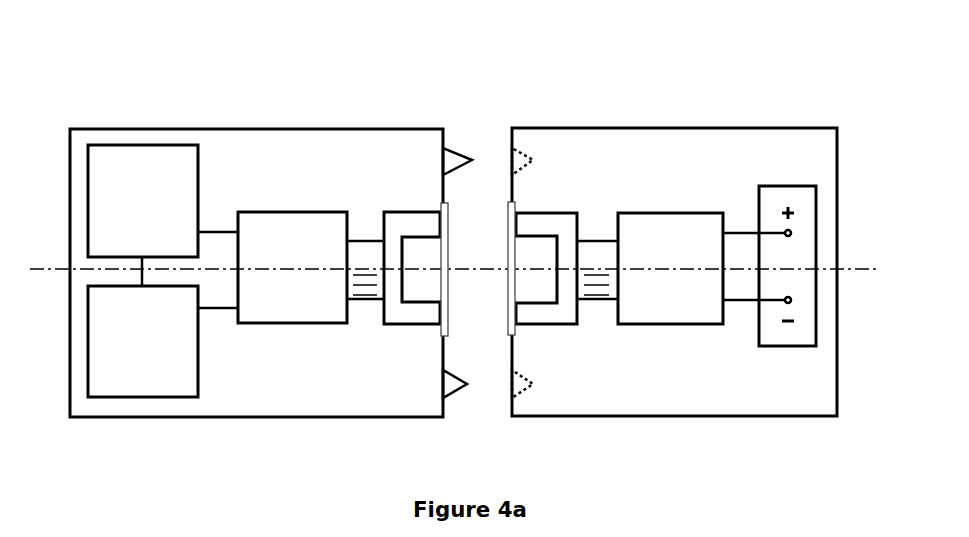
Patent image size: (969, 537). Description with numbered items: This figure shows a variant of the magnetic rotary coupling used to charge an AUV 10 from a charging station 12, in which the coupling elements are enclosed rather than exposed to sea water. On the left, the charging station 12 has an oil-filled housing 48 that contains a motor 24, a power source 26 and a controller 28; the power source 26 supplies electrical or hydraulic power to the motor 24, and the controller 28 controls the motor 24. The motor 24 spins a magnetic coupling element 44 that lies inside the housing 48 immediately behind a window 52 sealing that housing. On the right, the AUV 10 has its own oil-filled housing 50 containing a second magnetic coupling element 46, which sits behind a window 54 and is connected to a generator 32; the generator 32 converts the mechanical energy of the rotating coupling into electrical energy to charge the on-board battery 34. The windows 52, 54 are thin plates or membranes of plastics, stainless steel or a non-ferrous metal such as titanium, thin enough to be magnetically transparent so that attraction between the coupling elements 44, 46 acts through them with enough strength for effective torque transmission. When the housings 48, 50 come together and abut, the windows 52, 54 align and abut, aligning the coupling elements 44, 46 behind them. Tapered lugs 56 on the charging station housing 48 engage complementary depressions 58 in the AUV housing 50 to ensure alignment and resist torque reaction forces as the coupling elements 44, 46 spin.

The AUV 10 is at (643, 96).
The charging station 12 is at (279, 90).
The motor 24 is at (278, 255).
The power source 26 is at (129, 205).
The controller 28 is at (129, 353).
The generator 32 is at (656, 255).
The on-board battery 34 is at (808, 237).
The magnetic coupling element 44 is at (398, 222).
The magnetic coupling element 46 is at (557, 222).
The oil-filled housing 48 is at (170, 128).
The oil-filled housing 50 is at (756, 127).
The window 52 is at (446, 230).
The window 54 is at (511, 300).
The tapered lug 56 is at (453, 152).
The depression 58 is at (526, 162).